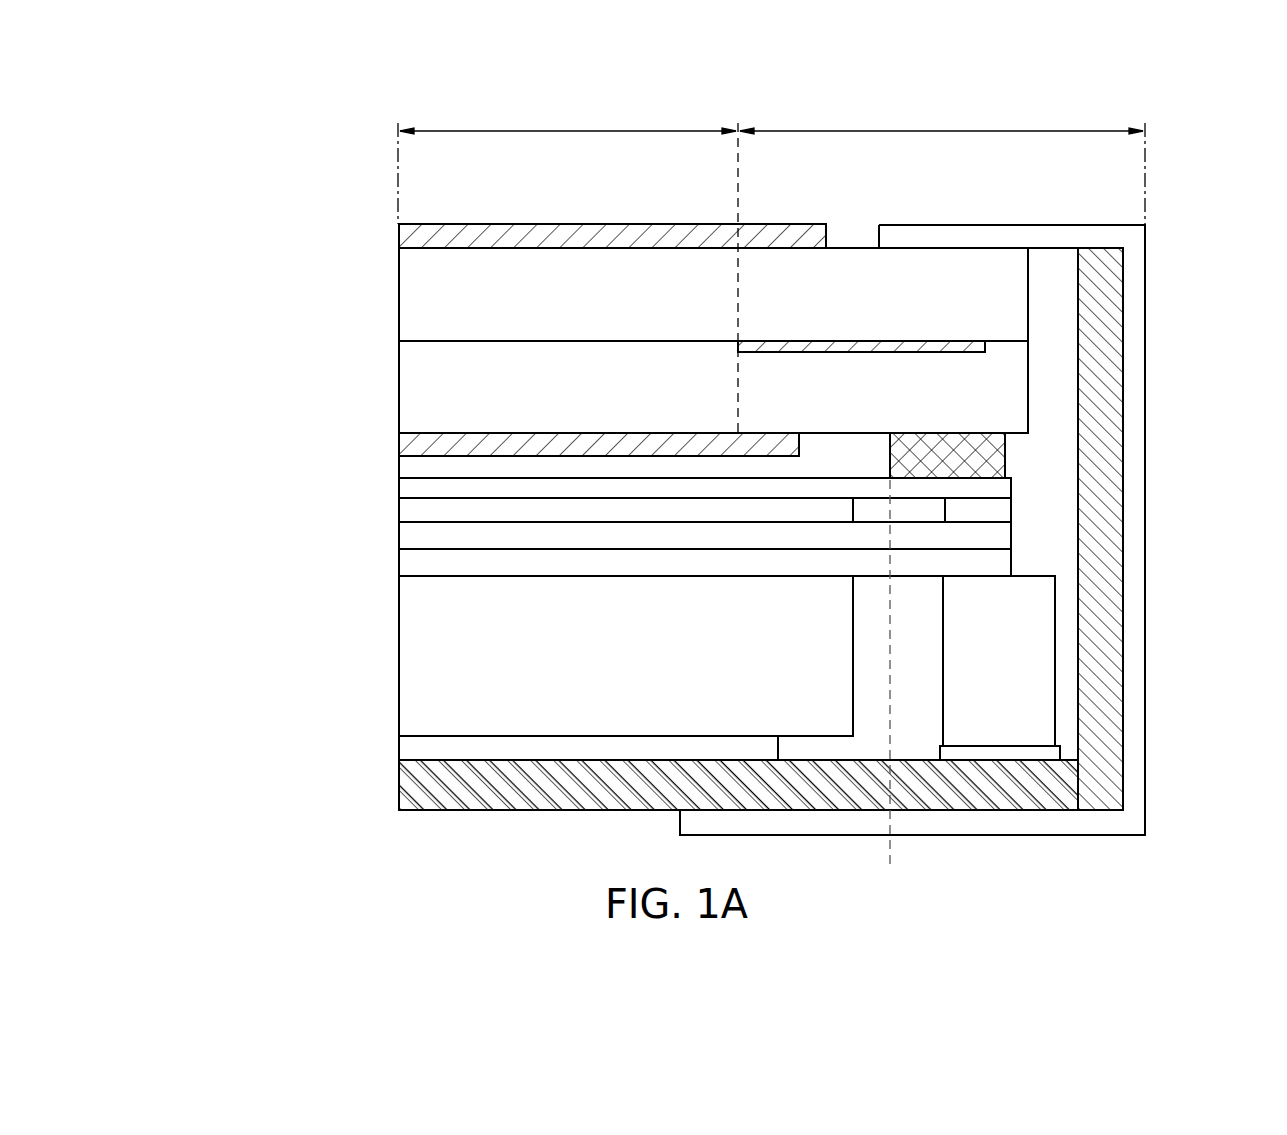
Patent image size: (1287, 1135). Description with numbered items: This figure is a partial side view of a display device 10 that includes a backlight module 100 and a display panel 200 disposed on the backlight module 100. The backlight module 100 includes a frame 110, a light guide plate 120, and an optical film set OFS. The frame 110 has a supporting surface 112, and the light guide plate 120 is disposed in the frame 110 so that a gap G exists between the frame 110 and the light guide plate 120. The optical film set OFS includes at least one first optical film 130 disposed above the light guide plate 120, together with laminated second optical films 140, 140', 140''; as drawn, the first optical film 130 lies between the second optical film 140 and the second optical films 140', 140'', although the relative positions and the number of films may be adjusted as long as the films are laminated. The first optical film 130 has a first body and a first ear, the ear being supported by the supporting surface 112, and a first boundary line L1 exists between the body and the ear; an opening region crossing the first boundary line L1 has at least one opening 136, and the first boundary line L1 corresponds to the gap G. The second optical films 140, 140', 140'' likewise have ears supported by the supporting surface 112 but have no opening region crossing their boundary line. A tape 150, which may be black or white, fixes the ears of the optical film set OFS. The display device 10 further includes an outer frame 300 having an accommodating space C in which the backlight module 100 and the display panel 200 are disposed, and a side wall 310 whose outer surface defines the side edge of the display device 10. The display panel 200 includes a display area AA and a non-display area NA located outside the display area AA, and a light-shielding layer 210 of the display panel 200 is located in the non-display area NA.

The display device 10 is at (237, 103).
The display area AA is at (568, 118).
The non-display area NA is at (941, 118).
The backlight module 100 is at (350, 663).
The frame 110 is at (1013, 660).
The supporting surface 112 is at (1030, 575).
The light guide plate 120 is at (432, 700).
The first optical film 130 is at (399, 510).
The opening 136 is at (840, 513).
The second optical film 140 is at (630, 486).
The second optical film 140' is at (630, 542).
The second optical film 140'' is at (630, 570).
The optical film set OFS is at (250, 473).
The tape 150 is at (965, 456).
The display panel 200 is at (350, 294).
The light-shielding layer 210 is at (862, 345).
The outer frame 300 is at (1135, 322).
The side wall 310 is at (1146, 358).
The accommodating space C is at (1068, 294).
The gap G is at (930, 707).
The first boundary line L1 is at (890, 848).